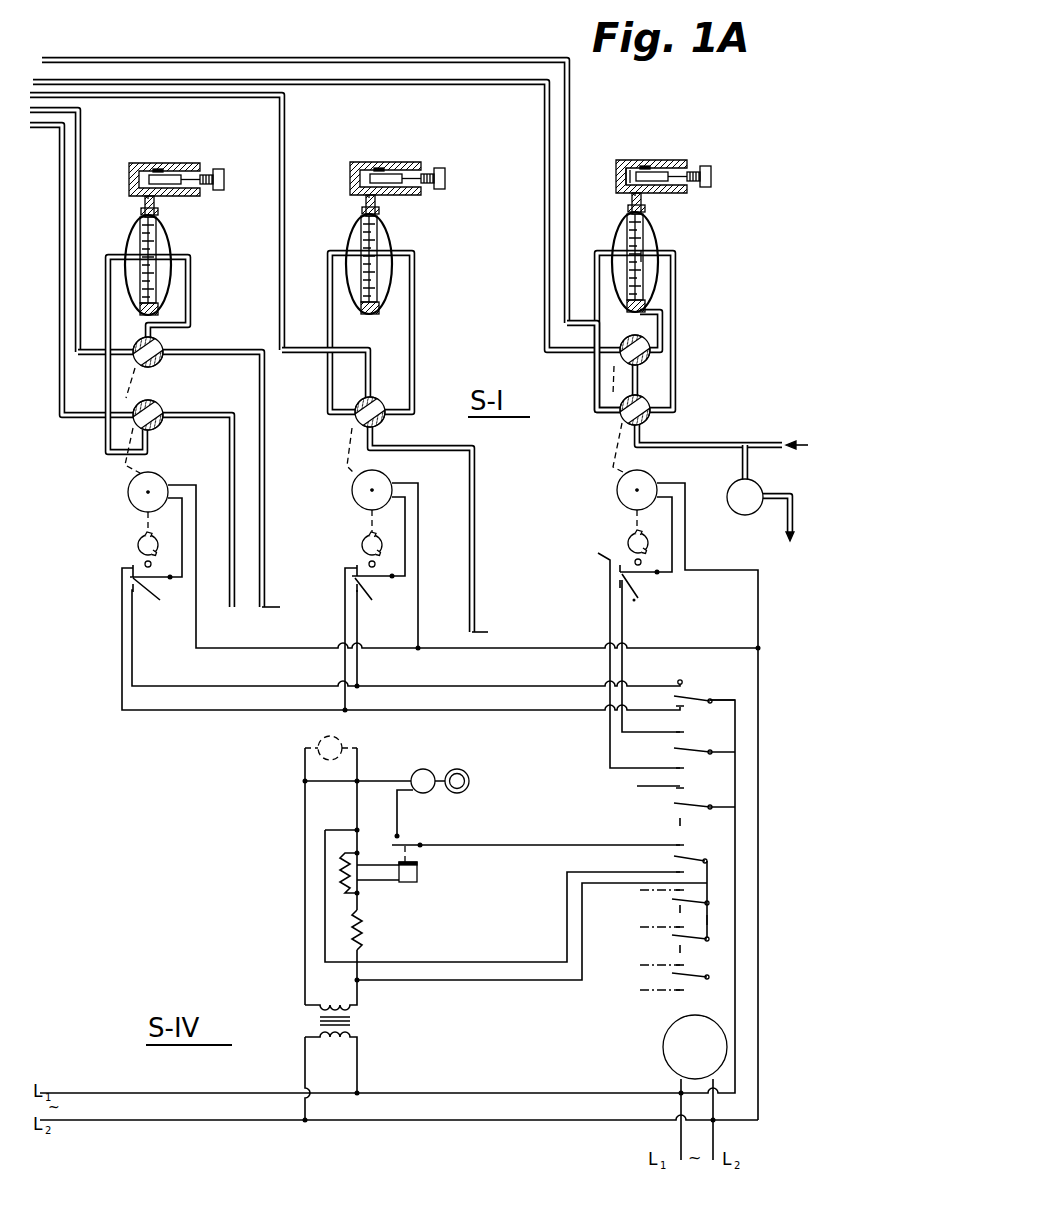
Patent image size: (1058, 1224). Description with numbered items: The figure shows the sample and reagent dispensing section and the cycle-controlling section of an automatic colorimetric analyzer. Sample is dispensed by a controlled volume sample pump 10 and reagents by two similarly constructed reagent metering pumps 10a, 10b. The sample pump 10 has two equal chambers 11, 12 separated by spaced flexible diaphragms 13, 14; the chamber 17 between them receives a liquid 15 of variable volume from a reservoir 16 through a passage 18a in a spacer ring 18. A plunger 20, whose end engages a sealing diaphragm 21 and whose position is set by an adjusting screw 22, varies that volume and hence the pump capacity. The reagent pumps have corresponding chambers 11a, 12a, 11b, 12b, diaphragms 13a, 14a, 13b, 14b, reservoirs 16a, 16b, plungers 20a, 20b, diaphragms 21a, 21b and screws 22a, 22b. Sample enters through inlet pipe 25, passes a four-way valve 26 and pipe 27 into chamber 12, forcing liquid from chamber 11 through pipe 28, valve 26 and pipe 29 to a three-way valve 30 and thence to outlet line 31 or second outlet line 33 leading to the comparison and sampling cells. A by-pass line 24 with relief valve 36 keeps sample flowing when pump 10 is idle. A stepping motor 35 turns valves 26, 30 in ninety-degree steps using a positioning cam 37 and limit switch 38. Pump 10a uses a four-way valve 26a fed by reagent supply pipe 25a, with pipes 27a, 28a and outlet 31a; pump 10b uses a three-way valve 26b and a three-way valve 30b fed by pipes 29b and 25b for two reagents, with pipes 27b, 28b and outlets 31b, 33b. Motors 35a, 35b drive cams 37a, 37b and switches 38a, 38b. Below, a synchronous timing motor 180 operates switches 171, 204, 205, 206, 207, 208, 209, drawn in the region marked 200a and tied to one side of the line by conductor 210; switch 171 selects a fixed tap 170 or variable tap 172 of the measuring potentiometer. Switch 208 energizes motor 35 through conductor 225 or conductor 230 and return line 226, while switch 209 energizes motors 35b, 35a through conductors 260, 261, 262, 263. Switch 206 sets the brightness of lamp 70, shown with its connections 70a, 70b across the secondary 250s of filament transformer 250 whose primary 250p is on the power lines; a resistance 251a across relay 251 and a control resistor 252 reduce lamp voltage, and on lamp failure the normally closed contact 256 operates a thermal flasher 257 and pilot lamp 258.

The sample pump 10 is at (690, 218).
The reagent metering pump 10a is at (436, 222).
The reagent metering pump 10b is at (210, 225).
The pump chamber 11 is at (614, 276).
The pump chamber 11a is at (356, 238).
The pump chamber 11b is at (136, 235).
The pump chamber 12 is at (648, 270).
The pump chamber 12a is at (384, 259).
The pump chamber 12b is at (163, 245).
The flexible diaphragm 13 is at (642, 243).
The flexible diaphragm 13a is at (365, 266).
The flexible diaphragm 13b is at (143, 250).
The flexible diaphragm 14 is at (643, 284).
The flexible diaphragm 14a is at (378, 267).
The flexible diaphragm 14b is at (156, 255).
The liquid 15 is at (624, 165).
The reservoir 16 is at (673, 160).
The reservoir 16a is at (408, 163).
The reservoir 16b is at (180, 165).
The chamber 17 is at (640, 256).
The spacer ring 18 is at (662, 313).
The passage 18a is at (629, 208).
The plunger 20 is at (647, 168).
The plunger 20a is at (381, 170).
The plunger 20b is at (162, 173).
The flexible diaphragm 21 is at (690, 189).
The flexible diaphragm 21a is at (424, 190).
The flexible diaphragm 21b is at (203, 192).
The adjusting screw 22 is at (712, 177).
The adjusting screw 22a is at (446, 177).
The adjusting screw 22b is at (226, 178).
The by-pass line 24 is at (748, 462).
The inlet pipe 25 is at (728, 443).
The reagent supply pipe 25a is at (470, 556).
The pipe 25b is at (228, 430).
The four-way valve 26 is at (650, 418).
The four-way valve 26a is at (383, 404).
The three-way valve 26b is at (160, 405).
The pipe 27 is at (677, 334).
The pipe 27a is at (414, 318).
The pipe 27b is at (190, 300).
The pipe 28 is at (567, 302).
The pipe 28a is at (330, 298).
The pipe 28b is at (108, 312).
The discharge line 29 is at (640, 376).
The pipe 29b is at (265, 470).
The three-way valve 30 is at (621, 356).
The three-way valve 30b is at (164, 350).
The outlet line 31 is at (568, 143).
The outlet line 31a is at (284, 222).
The outlet line 31b is at (81, 173).
The second outlet line 33 is at (546, 256).
The outlet line 33b is at (62, 262).
The motor 35 is at (626, 487).
The motor 35a is at (360, 490).
The motor 35b is at (128, 496).
The relief valve 36 is at (738, 511).
The positioning cam 37 is at (628, 539).
The positioning cam 37a is at (362, 546).
The positioning cam 37b is at (138, 545).
The limit switch 38 is at (626, 594).
The limit switch 38a is at (366, 584).
The limit switch 38b is at (150, 586).
The lamp 70 is at (340, 750).
The timer lead 70a is at (304, 768).
The timer lead 70b is at (360, 773).
The fixed tap 170 is at (652, 966).
The switch 171 is at (692, 974).
The variable tap 172 is at (642, 991).
The timing motor 180 is at (665, 1050).
The switch bank 200a is at (710, 920).
The switch 204 is at (708, 938).
The switch 205 is at (672, 898).
The switch 206 is at (700, 855).
The switch 207 is at (700, 803).
The switch 208 is at (700, 747).
The switch 209 is at (700, 697).
The conductor 210 is at (455, 1092).
The conductor 225 is at (623, 663).
The return line 226 is at (757, 594).
The conductor 230 is at (608, 612).
The lamp filament transformer 250 is at (408, 1035).
The secondary 250s is at (331, 1006).
The primary 250p is at (328, 1038).
The relay 251 is at (418, 872).
The resistance 251a is at (340, 878).
The control resistor 252 is at (362, 925).
The relay contact 256 is at (408, 843).
The thermal flasher 257 is at (428, 771).
The pilot lamp 258 is at (470, 784).
The conductor 260 is at (472, 676).
The conductor 261 is at (293, 650).
The conductor 262 is at (350, 626).
The conductor 263 is at (419, 578).